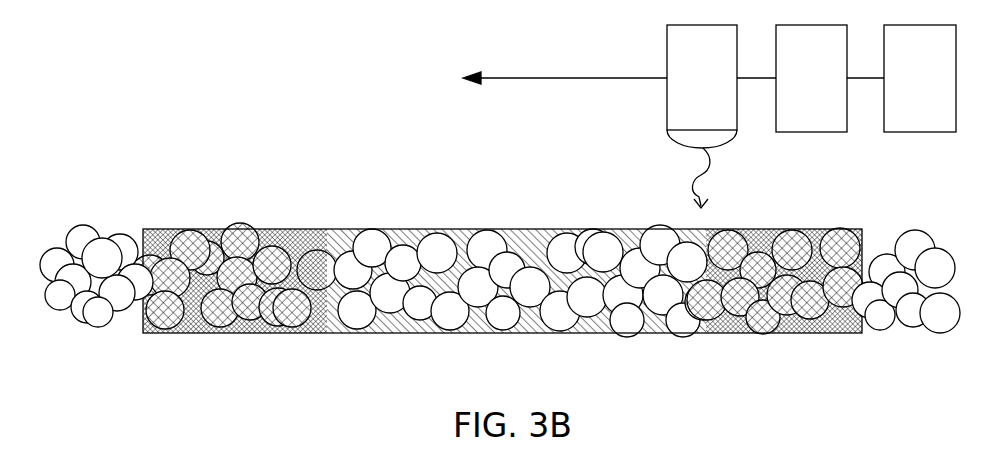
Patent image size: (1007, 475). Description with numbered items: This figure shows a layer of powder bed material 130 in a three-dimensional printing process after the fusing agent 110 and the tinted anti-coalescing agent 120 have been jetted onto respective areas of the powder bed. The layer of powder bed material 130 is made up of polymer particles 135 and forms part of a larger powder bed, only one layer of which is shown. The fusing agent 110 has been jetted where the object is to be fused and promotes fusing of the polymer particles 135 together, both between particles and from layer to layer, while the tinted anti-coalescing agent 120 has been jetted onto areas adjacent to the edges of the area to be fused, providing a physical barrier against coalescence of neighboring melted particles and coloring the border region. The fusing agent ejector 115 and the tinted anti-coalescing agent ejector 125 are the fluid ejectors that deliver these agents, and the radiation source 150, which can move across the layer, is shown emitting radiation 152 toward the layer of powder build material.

The fusing agent 110 is at (393, 230).
The fusing agent ejector 115 is at (900, 89).
The tinted anti-coalescing agent 120 is at (270, 230).
The tinted anti-coalescing agent ejector 125 is at (791, 89).
The powder bed material 130 is at (496, 229).
The polymer particles 135 is at (91, 231).
The radiation source 150 is at (681, 89).
The radiation 152 is at (688, 193).